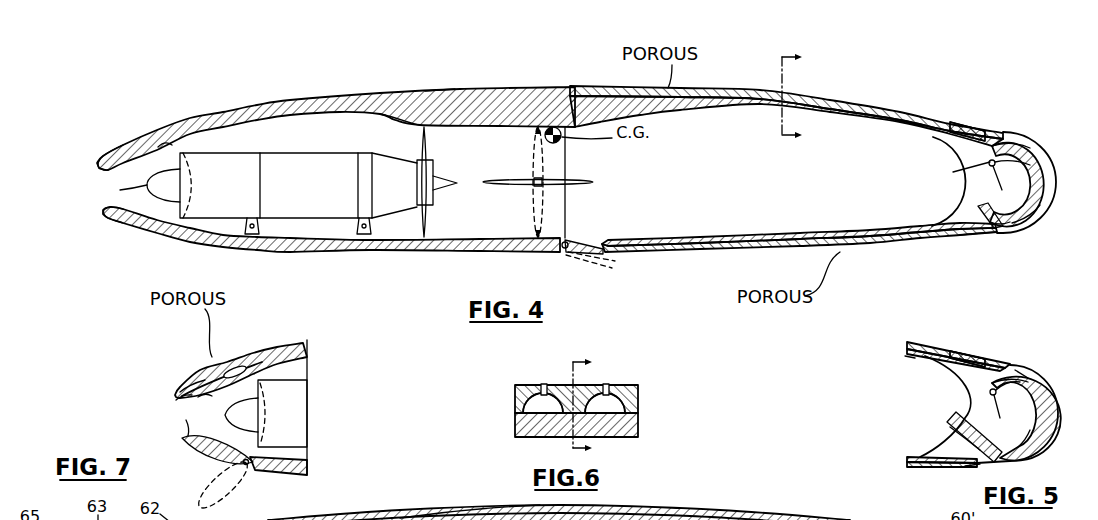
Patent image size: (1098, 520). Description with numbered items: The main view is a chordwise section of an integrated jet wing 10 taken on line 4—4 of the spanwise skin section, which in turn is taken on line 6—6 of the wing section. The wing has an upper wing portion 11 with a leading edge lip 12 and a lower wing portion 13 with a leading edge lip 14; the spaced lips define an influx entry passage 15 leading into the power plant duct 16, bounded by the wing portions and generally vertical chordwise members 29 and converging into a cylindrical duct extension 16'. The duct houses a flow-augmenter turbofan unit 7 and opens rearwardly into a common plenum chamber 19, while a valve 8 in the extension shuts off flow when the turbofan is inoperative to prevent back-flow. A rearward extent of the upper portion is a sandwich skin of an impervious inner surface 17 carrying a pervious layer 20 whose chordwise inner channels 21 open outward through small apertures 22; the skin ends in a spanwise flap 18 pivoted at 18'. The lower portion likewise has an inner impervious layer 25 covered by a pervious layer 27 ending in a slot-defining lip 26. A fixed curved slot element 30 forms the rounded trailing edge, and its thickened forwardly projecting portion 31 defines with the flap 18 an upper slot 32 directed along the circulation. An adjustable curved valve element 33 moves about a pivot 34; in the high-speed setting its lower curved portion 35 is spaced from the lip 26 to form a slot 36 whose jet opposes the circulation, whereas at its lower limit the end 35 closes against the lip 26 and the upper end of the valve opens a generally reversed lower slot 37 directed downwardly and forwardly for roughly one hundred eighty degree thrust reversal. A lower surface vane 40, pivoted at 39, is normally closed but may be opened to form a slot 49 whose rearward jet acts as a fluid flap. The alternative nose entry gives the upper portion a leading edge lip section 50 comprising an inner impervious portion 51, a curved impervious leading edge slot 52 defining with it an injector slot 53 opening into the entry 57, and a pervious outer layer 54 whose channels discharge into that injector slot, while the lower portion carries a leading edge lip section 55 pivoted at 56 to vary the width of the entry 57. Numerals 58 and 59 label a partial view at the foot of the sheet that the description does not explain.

In FIG. 6, the chordwise section line 4 is at (574, 404).
In FIG. 4, the spanwise section line 6 is at (783, 94).
In FIG. 4, the flow-augmenter turbofan unit 7 is at (302, 182).
In FIG. 4, the valve 8 is at (578, 181).
In FIG. 4, the integrated jet wing 10 is at (440, 90).
In FIG. 7, the integrated jet wing 10 is at (300, 363).
In FIG. 5, the integrated jet wing 10 is at (903, 355).
In FIG. 4, the upper wing portion 11 is at (262, 106).
In FIG. 7, the upper wing portion 11 is at (300, 342).
In FIG. 4, the leading edge lip 12 is at (108, 153).
In FIG. 4, the lower wing portion 13 is at (308, 252).
In FIG. 7, the lower wing portion 13 is at (307, 466).
In FIG. 4, the leading edge lip 14 is at (112, 222).
In FIG. 4, the influx entry passage 15 is at (95, 190).
In FIG. 4, the power plant duct 16 is at (367, 126).
In FIG. 4, the cylindrical duct extension 16' is at (517, 182).
In FIG. 4, the impervious inner surface 17 is at (866, 115).
In FIG. 6, the impervious inner surface 17 is at (639, 427).
In FIG. 5, the impervious inner surface 17 is at (905, 350).
In FIG. 4, the flap 18 is at (970, 112).
In FIG. 5, the flap 18 is at (967, 336).
In FIG. 4, the pivot 18' is at (928, 180).
In FIG. 4, the common plenum chamber 19 is at (642, 182).
In FIG. 5, the common plenum chamber 19 is at (910, 386).
In FIG. 4, the pervious layer 20 is at (912, 105).
In FIG. 6, the pervious layer 20 is at (639, 395).
In FIG. 5, the pervious layer 20 is at (920, 342).
In FIG. 6, the inner channels 21 is at (535, 408).
In FIG. 6, the outer pores 22 is at (545, 388).
In FIG. 4, the inner impervious layer 25 is at (700, 237).
In FIG. 5, the inner impervious layer 25 is at (910, 460).
In FIG. 4, the slot-defining lip 26 is at (972, 240).
In FIG. 5, the slot-defining lip 26 is at (975, 468).
In FIG. 4, the pervious layer 27 is at (790, 251).
In FIG. 5, the pervious layer 27 is at (910, 467).
In FIG. 4, the vertical chordwise members 29 is at (140, 152).
In FIG. 4, the fixed curved slot element 30 is at (1056, 165).
In FIG. 5, the fixed curved slot element 30 is at (1053, 405).
In FIG. 4, the thickened upper forwardly projecting portion 31 is at (988, 160).
In FIG. 5, the thickened upper forwardly projecting portion 31 is at (1022, 372).
In FIG. 4, the upper slot 32 is at (1003, 138).
In FIG. 5, the upper slot 32 is at (1005, 368).
In FIG. 4, the adjustable curved valve element 33 is at (1032, 226).
In FIG. 5, the adjustable curved valve element 33 is at (965, 420).
In FIG. 4, the pivot 34 is at (1009, 181).
In FIG. 5, the pivot 34 is at (1000, 408).
In FIG. 4, the lower curved portion 35 is at (980, 208).
In FIG. 5, the lower curved portion 35 is at (950, 427).
In FIG. 4, the slot 36 is at (1002, 233).
In FIG. 5, the generally-reversed lower slot 37 is at (1035, 443).
In FIG. 4, the pivot 39 is at (563, 250).
In FIG. 4, the lower surface vane 40 is at (587, 253).
In FIG. 4, the slot 49 is at (614, 262).
In FIG. 7, the leading edge lip section 50 is at (183, 385).
In FIG. 7, the inner impervious portion 51 is at (228, 370).
In FIG. 7, the curved impervious leading edge slot 52 is at (173, 398).
In FIG. 7, the injector slot 53 is at (202, 398).
In FIG. 7, the pervious outer layer 54 is at (212, 368).
In FIG. 7, the leading edge lip section 55 is at (205, 455).
In FIG. 7, the pivot 56 is at (252, 468).
In FIG. 7, the entry 57 is at (183, 427).
In FIG. 6, the skin 58 is at (468, 508).
In FIG. 6, the envelope 59 is at (372, 513).